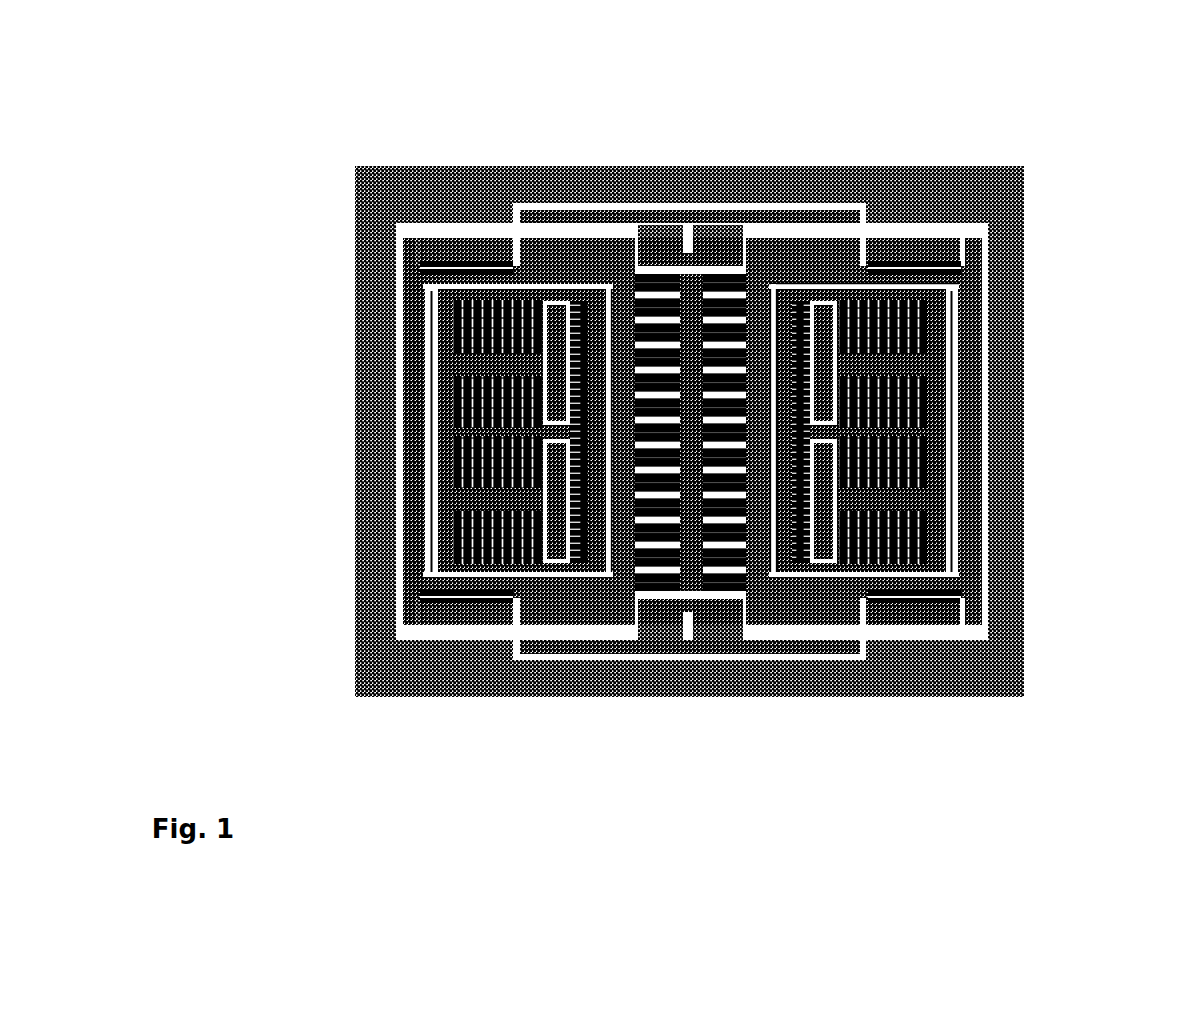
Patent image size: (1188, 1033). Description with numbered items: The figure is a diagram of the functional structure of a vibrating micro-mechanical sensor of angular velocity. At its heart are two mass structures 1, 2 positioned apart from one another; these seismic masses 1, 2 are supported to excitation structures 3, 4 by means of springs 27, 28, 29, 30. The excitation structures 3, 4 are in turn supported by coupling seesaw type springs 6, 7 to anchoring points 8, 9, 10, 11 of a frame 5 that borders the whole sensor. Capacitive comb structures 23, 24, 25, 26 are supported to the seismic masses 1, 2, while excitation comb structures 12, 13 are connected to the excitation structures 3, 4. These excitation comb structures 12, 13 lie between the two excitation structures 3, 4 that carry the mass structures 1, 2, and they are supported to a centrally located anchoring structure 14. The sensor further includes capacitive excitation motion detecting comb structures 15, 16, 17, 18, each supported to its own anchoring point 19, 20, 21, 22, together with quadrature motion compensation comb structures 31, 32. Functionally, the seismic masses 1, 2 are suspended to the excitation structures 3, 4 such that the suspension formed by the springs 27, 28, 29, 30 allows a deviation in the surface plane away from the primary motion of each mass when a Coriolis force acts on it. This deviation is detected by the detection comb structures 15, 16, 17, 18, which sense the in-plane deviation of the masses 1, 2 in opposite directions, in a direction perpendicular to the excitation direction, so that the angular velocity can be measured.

The mass structure 1 is at (518, 326).
The mass structure 2 is at (864, 182).
The excitation structure 3 is at (692, 350).
The excitation structure 4 is at (945, 430).
The frame 5 is at (754, 431).
The coupling seesaw type spring 6 is at (689, 171).
The coupling seesaw type spring 7 is at (689, 684).
The anchoring point 8 is at (676, 171).
The anchoring point 9 is at (730, 171).
The anchoring point 10 is at (688, 685).
The anchoring point 11 is at (743, 685).
The excitation comb structure 12 is at (900, 430).
The excitation comb structure 13 is at (934, 432).
The anchoring structure 14 is at (985, 435).
The excitation motion detecting comb structure 15 is at (497, 175).
The excitation motion detecting comb structure 16 is at (1025, 249).
The excitation motion detecting comb structure 17 is at (493, 680).
The excitation motion detecting comb structure 18 is at (1002, 571).
The anchoring point 19 is at (450, 175).
The anchoring point 20 is at (929, 175).
The anchoring point 21 is at (444, 680).
The anchoring point 22 is at (916, 684).
The capacitive comb structure 23 is at (588, 249).
The capacitive comb structure 24 is at (986, 364).
The capacitive comb structure 25 is at (512, 641).
The capacitive comb structure 26 is at (1002, 532).
The spring 27 is at (407, 350).
The spring 28 is at (644, 527).
The spring 29 is at (824, 326).
The spring 30 is at (970, 430).
The quadrature motion compensation comb structure 31 is at (598, 536).
The quadrature motion compensation comb structure 32 is at (848, 536).